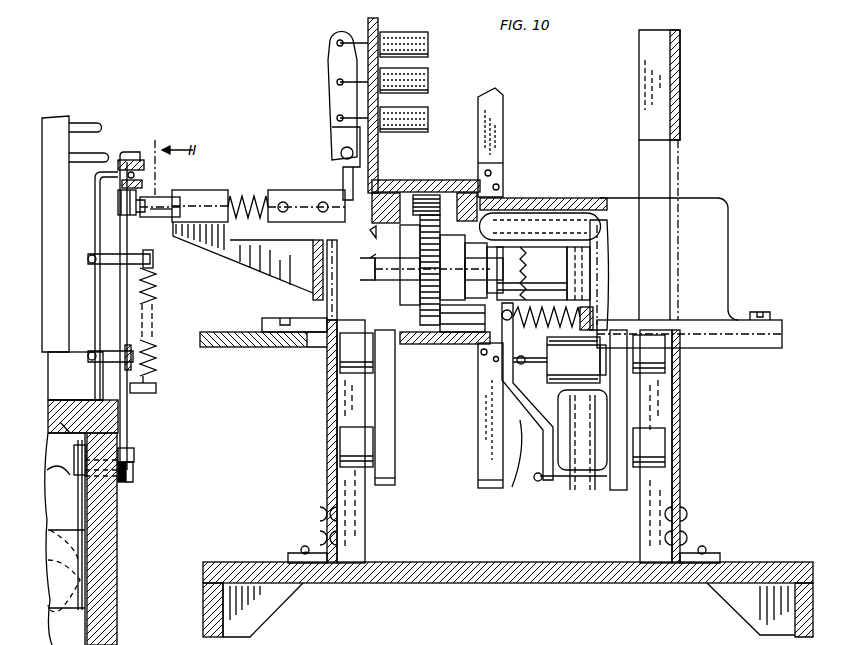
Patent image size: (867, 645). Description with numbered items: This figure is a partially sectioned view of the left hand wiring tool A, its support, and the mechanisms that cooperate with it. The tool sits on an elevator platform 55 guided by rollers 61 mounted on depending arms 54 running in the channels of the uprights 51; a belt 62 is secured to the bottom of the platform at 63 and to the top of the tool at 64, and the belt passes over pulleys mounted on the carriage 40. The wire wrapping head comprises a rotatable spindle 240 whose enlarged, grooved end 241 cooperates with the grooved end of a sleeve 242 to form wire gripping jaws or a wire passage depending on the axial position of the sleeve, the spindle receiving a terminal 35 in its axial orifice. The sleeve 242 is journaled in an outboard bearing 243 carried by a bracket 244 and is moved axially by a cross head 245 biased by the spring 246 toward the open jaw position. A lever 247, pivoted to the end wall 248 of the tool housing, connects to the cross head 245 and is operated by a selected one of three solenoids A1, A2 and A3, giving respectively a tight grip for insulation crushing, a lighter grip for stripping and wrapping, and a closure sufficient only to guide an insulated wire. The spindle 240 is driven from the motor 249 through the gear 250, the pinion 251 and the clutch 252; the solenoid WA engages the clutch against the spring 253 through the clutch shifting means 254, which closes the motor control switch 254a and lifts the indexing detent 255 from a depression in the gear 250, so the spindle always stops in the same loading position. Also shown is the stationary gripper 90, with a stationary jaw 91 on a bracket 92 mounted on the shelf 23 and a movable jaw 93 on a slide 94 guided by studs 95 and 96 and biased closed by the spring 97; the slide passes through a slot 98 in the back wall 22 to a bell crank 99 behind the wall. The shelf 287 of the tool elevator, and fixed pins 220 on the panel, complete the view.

The terminals 35 is at (87, 122).
The fixed pins 220 is at (90, 158).
The enlarged grooved end 241 is at (113, 178).
The stationary jaw 91 is at (133, 160).
The bracket 92 is at (96, 211).
The movable jaw 93 is at (134, 215).
The rotatable spindle 240 is at (140, 212).
The sleeve 242 is at (153, 197).
The outboard bearing 243 is at (204, 190).
The spring 246 is at (250, 196).
The cross head 245 is at (330, 190).
The bracket 244 is at (252, 268).
The stud 95 is at (110, 262).
The stationary gripper 90 is at (165, 301).
The spring 97 is at (157, 362).
The stud 96 is at (112, 362).
The slide 94 is at (120, 315).
The back wall 22 is at (116, 518).
The shelf 23 is at (52, 468).
The bell crank 99 is at (82, 538).
The slot 98 is at (126, 488).
The end wall 248 is at (365, 230).
The shelf 287 is at (262, 345).
The lever 247 is at (328, 100).
The solenoid A3 is at (428, 45).
The solenoid A2 is at (428, 82).
The solenoid A1 is at (428, 119).
The belts 62 is at (503, 103).
The belt attachment point 64 is at (503, 171).
The pinion 251 is at (426, 195).
The gear 250 is at (438, 330).
The indexing detent 255 is at (460, 344).
The belt attachment point 63 is at (480, 353).
The clutch 252 is at (520, 246).
The motor 249 is at (598, 218).
The spring 253 is at (545, 350).
The clutch shifting means 254 is at (535, 482).
The solenoid WA is at (576, 360).
The motor control switch 254a is at (583, 488).
The uprights 51 is at (340, 483).
The rollers 61 is at (345, 443).
The depending arms 54 is at (388, 418).
The elevator platform 55 is at (740, 348).
The carriage 40 is at (695, 584).